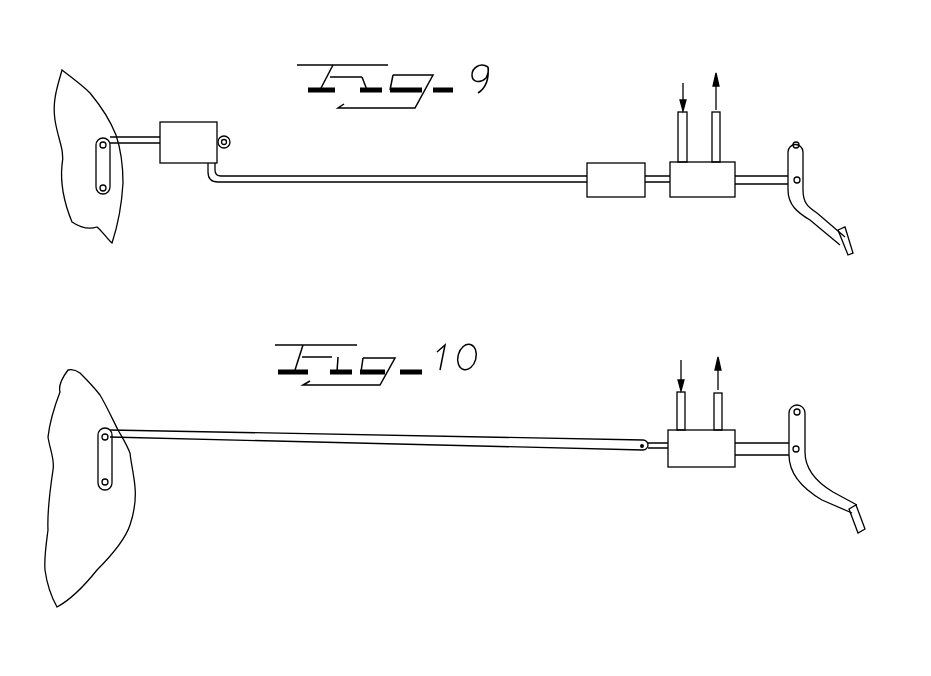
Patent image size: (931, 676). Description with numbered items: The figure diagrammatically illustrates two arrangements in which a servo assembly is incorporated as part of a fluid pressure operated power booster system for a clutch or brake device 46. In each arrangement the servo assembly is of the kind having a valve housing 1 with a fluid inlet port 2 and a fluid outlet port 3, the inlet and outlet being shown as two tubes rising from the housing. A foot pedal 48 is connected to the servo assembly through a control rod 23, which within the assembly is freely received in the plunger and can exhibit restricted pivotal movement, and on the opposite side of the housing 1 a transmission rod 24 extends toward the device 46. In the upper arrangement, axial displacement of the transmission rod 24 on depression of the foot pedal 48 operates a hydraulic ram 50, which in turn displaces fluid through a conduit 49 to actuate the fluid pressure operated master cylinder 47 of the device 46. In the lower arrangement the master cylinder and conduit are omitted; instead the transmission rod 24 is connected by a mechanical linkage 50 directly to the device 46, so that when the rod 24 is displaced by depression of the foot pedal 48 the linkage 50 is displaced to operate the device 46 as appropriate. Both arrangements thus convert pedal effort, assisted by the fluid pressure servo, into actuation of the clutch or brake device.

In FIG. 9, the valve housing 1 is at (702, 183).
In FIG. 10, the valve housing 1 is at (702, 457).
In FIG. 9, the fluid inlet port 2 is at (680, 140).
In FIG. 10, the fluid inlet port 2 is at (677, 407).
In FIG. 9, the fluid outlet port 3 is at (717, 133).
In FIG. 10, the fluid outlet port 3 is at (722, 403).
In FIG. 9, the control rod 23 is at (758, 185).
In FIG. 10, the control rod 23 is at (758, 456).
In FIG. 9, the transmission rod 24 is at (658, 184).
In FIG. 10, the transmission rod 24 is at (657, 452).
In FIG. 9, the clutch or brake device 46 is at (130, 187).
In FIG. 10, the clutch or brake device 46 is at (136, 492).
In FIG. 9, the master cylinder 47 is at (185, 132).
In FIG. 9, the foot pedal 48 is at (810, 220).
In FIG. 10, the foot pedal 48 is at (810, 493).
In FIG. 9, the conduit 49 is at (352, 183).
In FIG. 9, the hydraulic ram 50 is at (605, 173).
In FIG. 10, the hydraulic ram 50 is at (287, 445).